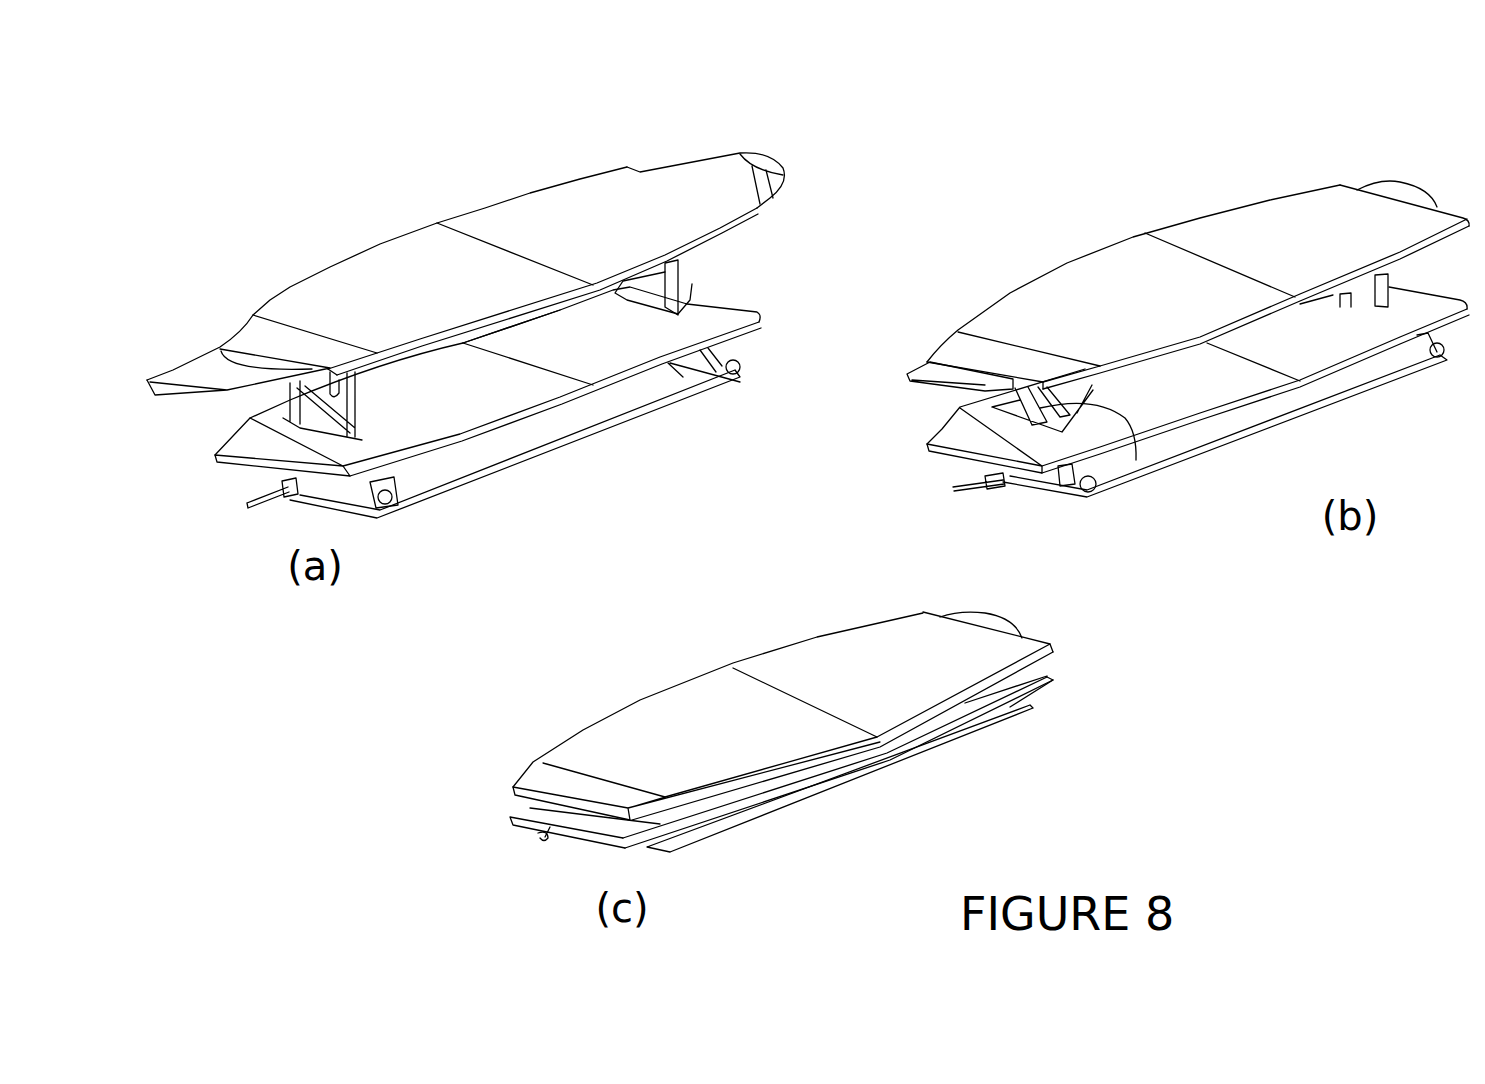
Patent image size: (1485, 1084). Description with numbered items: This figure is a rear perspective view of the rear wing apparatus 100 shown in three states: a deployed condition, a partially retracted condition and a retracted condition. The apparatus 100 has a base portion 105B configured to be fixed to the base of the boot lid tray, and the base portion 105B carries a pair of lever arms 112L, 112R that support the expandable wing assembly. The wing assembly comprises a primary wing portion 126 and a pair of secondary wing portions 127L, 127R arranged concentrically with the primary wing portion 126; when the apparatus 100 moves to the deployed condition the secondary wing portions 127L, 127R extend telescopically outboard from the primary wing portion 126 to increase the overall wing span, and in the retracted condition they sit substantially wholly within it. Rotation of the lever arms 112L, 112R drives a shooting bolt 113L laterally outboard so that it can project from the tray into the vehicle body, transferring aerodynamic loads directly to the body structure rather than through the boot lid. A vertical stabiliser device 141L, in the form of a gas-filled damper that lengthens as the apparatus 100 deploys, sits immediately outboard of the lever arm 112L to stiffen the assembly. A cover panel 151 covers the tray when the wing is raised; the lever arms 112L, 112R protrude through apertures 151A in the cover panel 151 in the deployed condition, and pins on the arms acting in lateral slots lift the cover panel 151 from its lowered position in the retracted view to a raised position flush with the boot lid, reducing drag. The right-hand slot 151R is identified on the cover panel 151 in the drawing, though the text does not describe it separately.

The rear wing apparatus 100 is at (379, 183).
The primary wing portion 126 is at (528, 210).
The secondary wing portion 127R is at (752, 160).
The secondary wing portion 127L is at (170, 376).
The lever arm 112R is at (666, 290).
The lever arm 112L is at (300, 415).
The cover panel 151 is at (462, 428).
The right strut slot 151R is at (684, 303).
The aperture 151A is at (367, 432).
The base portion 105B is at (618, 412).
The shooting bolt 113L is at (246, 505).
The vertical stabiliser device 141L is at (399, 479).